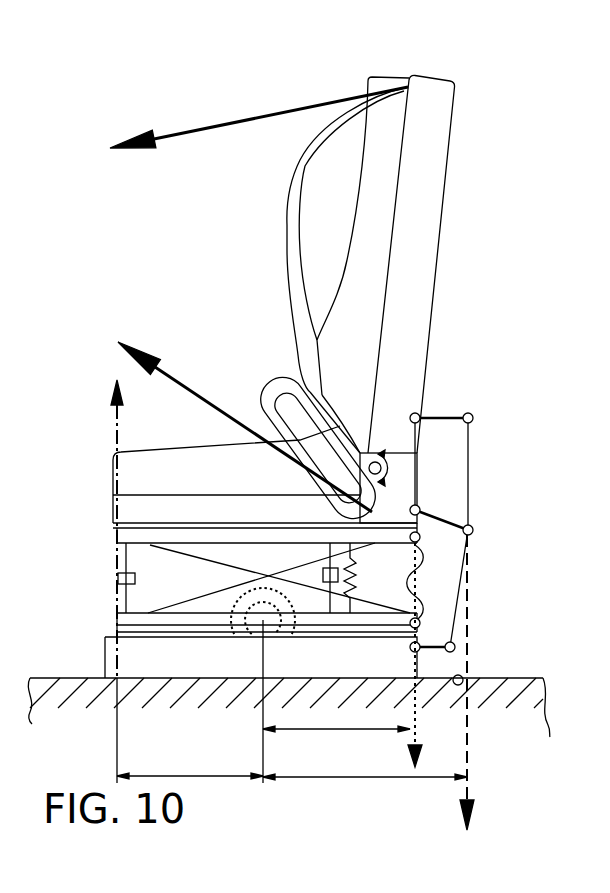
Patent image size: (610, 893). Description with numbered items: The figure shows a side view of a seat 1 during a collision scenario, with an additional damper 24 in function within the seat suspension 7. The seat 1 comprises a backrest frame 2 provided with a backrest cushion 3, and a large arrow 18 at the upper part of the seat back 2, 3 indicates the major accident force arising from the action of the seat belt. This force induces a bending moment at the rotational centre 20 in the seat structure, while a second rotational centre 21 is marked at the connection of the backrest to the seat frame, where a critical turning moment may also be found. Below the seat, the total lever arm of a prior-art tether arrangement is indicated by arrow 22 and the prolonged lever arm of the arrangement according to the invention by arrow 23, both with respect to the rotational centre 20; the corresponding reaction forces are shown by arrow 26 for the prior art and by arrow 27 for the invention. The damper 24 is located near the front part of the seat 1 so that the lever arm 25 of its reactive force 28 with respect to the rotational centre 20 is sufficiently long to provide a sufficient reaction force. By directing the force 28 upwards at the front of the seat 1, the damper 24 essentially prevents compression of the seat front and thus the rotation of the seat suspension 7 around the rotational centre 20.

The seat 1 is at (228, 313).
The backrest frame 2 is at (418, 236).
The backrest cushion 3 is at (383, 148).
The seat suspension 7 is at (108, 549).
The arrow indicating accident force 18 is at (218, 125).
The rotational centre 20 is at (240, 600).
The rotational centre 21 is at (392, 467).
The lever arm length of prior-art tether arrangement 22 is at (330, 729).
The lever arm length of tether arrangement according to the invention 23 is at (390, 777).
The damper 24 is at (117, 578).
The lever arm 25 is at (190, 776).
The reaction force of prior-art arrangement 26 is at (415, 663).
The reaction force of arrangement according to the invention 27 is at (468, 748).
The reactive force from the damper 28 is at (110, 422).